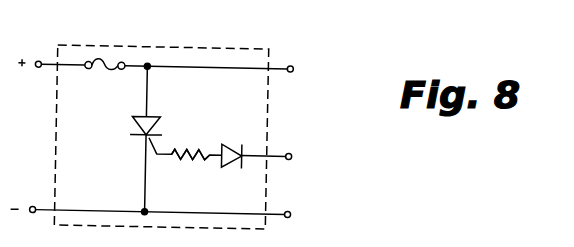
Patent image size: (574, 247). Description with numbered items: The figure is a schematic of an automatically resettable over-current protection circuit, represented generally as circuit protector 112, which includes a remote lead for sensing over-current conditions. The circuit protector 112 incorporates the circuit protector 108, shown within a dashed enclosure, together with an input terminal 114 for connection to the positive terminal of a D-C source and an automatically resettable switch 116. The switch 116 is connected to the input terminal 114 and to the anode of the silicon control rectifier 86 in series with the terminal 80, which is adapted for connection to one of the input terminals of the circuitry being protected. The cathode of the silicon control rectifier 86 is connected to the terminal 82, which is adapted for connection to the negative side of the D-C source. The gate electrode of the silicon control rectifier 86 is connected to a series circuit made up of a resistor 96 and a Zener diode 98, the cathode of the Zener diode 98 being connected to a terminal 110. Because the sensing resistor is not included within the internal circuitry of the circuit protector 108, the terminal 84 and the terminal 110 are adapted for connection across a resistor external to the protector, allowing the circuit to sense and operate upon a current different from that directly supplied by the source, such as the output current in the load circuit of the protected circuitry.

The terminal 80 is at (290, 64).
The terminal 82 is at (34, 215).
The terminal 84 is at (292, 209).
The silicon control rectifier 86 is at (131, 126).
The resistor 96 is at (186, 161).
The Zener diode 98 is at (228, 163).
The circuit protector 108 is at (218, 108).
The terminal 110 is at (291, 151).
The circuit protector 112 is at (228, 47).
The input terminal 114 is at (36, 63).
The automatically resettable switch 116 is at (105, 59).